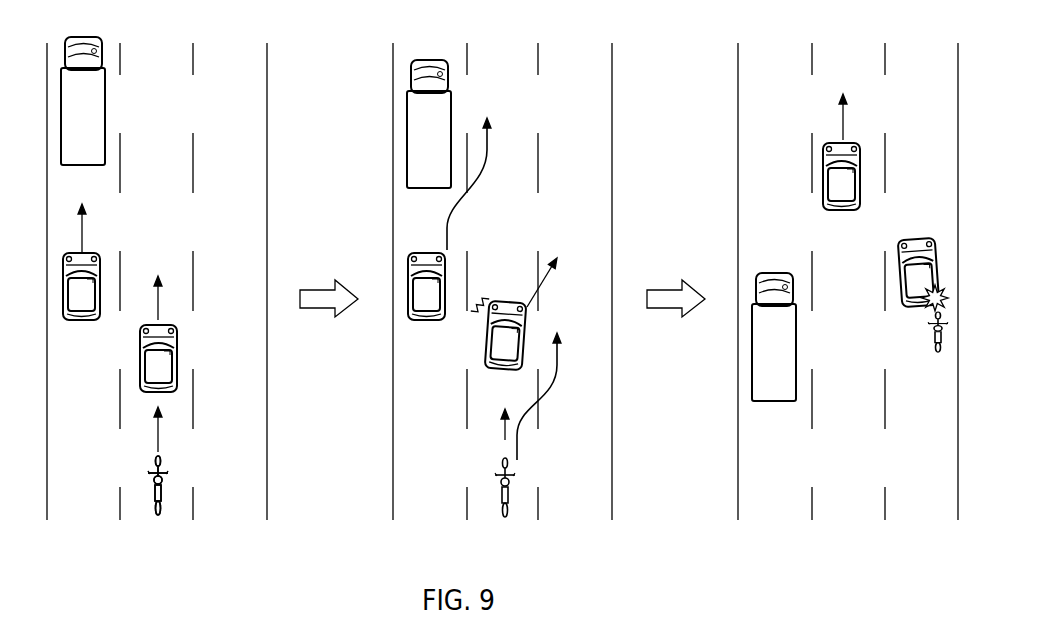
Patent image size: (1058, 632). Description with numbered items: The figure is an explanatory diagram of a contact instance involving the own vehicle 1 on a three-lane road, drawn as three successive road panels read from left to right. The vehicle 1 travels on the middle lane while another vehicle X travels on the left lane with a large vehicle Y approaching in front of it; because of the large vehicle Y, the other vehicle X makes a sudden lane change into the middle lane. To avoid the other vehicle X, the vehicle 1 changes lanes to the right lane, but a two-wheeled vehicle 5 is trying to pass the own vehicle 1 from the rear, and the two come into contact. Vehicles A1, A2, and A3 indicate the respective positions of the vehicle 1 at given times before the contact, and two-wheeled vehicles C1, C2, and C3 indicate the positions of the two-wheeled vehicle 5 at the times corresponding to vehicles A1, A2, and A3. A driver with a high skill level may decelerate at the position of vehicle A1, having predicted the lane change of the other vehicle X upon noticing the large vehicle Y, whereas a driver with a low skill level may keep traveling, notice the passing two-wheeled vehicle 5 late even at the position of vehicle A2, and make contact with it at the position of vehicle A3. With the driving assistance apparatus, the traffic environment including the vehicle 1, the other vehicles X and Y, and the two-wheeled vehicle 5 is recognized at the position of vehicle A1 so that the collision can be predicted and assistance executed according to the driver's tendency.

The vehicle 1 is at (163, 373).
The two-wheeled vehicle 5 is at (163, 483).
The other vehicle X is at (461, 246).
The large vehicle Y is at (428, 232).
The vehicle A1 is at (169, 298).
The vehicle A2 is at (514, 285).
The vehicle A3 is at (928, 263).
The two-wheeled vehicle C1 is at (160, 472).
The two-wheeled vehicle C2 is at (505, 473).
The two-wheeled vehicle C3 is at (937, 345).